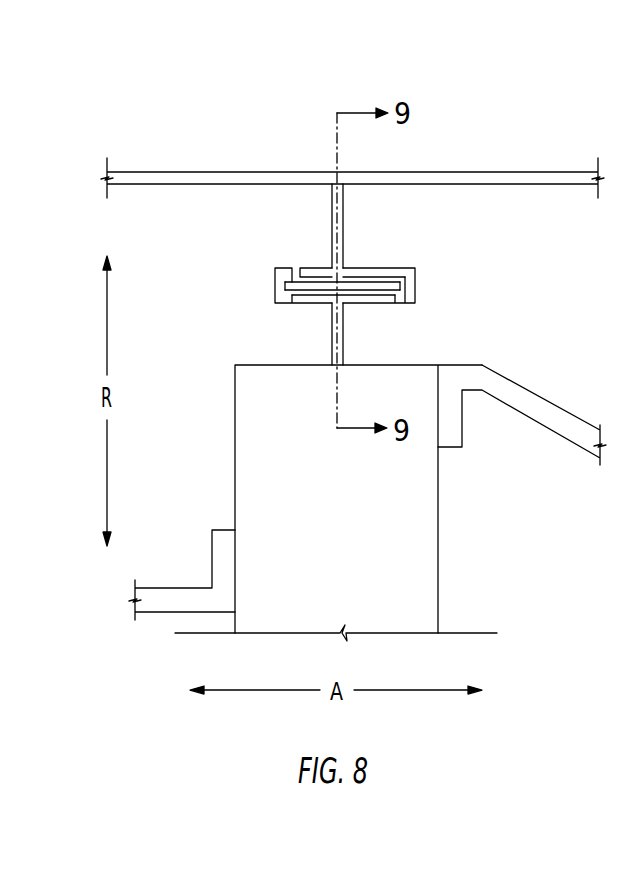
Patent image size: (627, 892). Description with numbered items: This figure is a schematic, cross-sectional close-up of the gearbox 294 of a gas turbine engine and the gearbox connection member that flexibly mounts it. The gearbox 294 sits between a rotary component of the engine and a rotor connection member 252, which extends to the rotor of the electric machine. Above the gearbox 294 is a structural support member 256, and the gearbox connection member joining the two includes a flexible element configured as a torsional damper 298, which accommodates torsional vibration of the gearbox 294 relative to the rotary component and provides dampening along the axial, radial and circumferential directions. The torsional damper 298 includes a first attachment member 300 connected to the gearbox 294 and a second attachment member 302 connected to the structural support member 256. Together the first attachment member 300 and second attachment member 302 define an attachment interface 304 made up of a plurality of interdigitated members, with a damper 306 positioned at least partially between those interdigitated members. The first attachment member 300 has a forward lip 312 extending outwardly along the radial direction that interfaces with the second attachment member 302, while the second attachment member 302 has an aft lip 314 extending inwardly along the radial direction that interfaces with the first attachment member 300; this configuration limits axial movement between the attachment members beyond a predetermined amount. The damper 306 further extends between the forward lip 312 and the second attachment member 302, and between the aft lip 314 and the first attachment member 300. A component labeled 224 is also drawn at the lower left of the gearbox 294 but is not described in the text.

The structural support member 256 is at (488, 181).
The second attachment member 302 is at (334, 228).
The damper 306 is at (360, 282).
The attachment interface 304 is at (385, 277).
The torsional damper 298 is at (386, 274).
The forward lip 312 is at (275, 286).
The aft lip 314 is at (420, 287).
The first attachment member 300 is at (330, 322).
The rotor connection member 252 is at (533, 400).
The gearbox 294 is at (250, 502).
The rail flange 224 is at (185, 592).